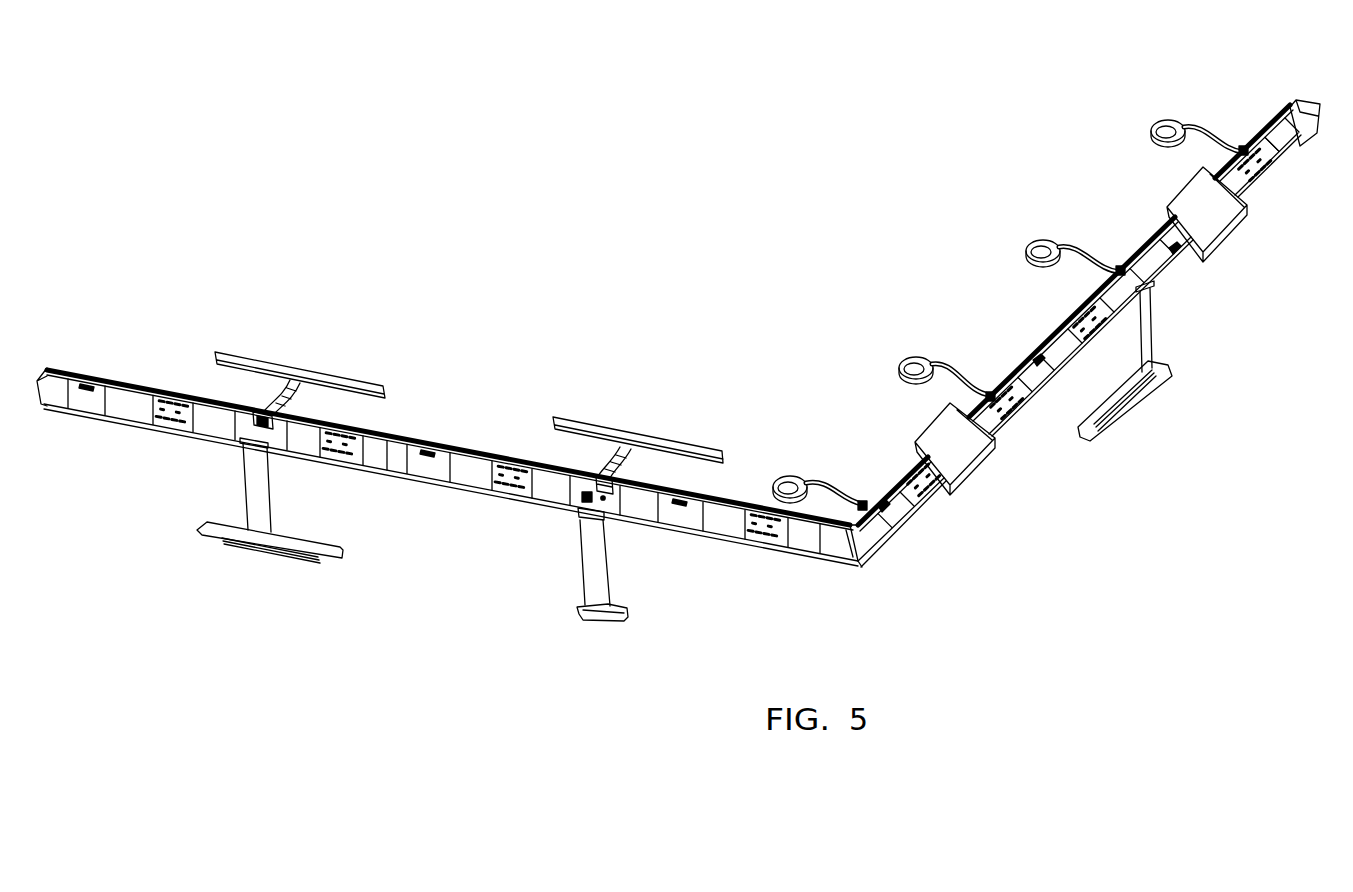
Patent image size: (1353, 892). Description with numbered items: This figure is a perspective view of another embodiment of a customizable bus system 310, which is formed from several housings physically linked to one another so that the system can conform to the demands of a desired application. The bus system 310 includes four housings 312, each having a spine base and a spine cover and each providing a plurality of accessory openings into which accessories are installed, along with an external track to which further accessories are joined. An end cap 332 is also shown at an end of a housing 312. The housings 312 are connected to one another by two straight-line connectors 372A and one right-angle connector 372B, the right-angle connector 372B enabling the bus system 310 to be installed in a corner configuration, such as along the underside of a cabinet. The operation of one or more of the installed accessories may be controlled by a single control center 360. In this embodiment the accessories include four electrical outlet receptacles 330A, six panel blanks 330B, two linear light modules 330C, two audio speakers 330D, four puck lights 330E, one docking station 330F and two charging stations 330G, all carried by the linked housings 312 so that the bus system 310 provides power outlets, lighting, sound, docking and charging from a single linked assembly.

The bus system 310 is at (497, 334).
The housing 312 is at (537, 424).
The end cap 332 is at (58, 362).
The control center 360 is at (1283, 130).
The straight-line connector 372A is at (420, 416).
The right-angle connector 372B is at (860, 566).
The electrical outlet receptacle 330A is at (713, 366).
The panel blank 330B is at (648, 405).
The linear light module 330C is at (469, 420).
The audio speaker 330D is at (1081, 334).
The puck light 330E is at (998, 300).
The docking station 330F is at (618, 612).
The charging station 330G is at (684, 440).